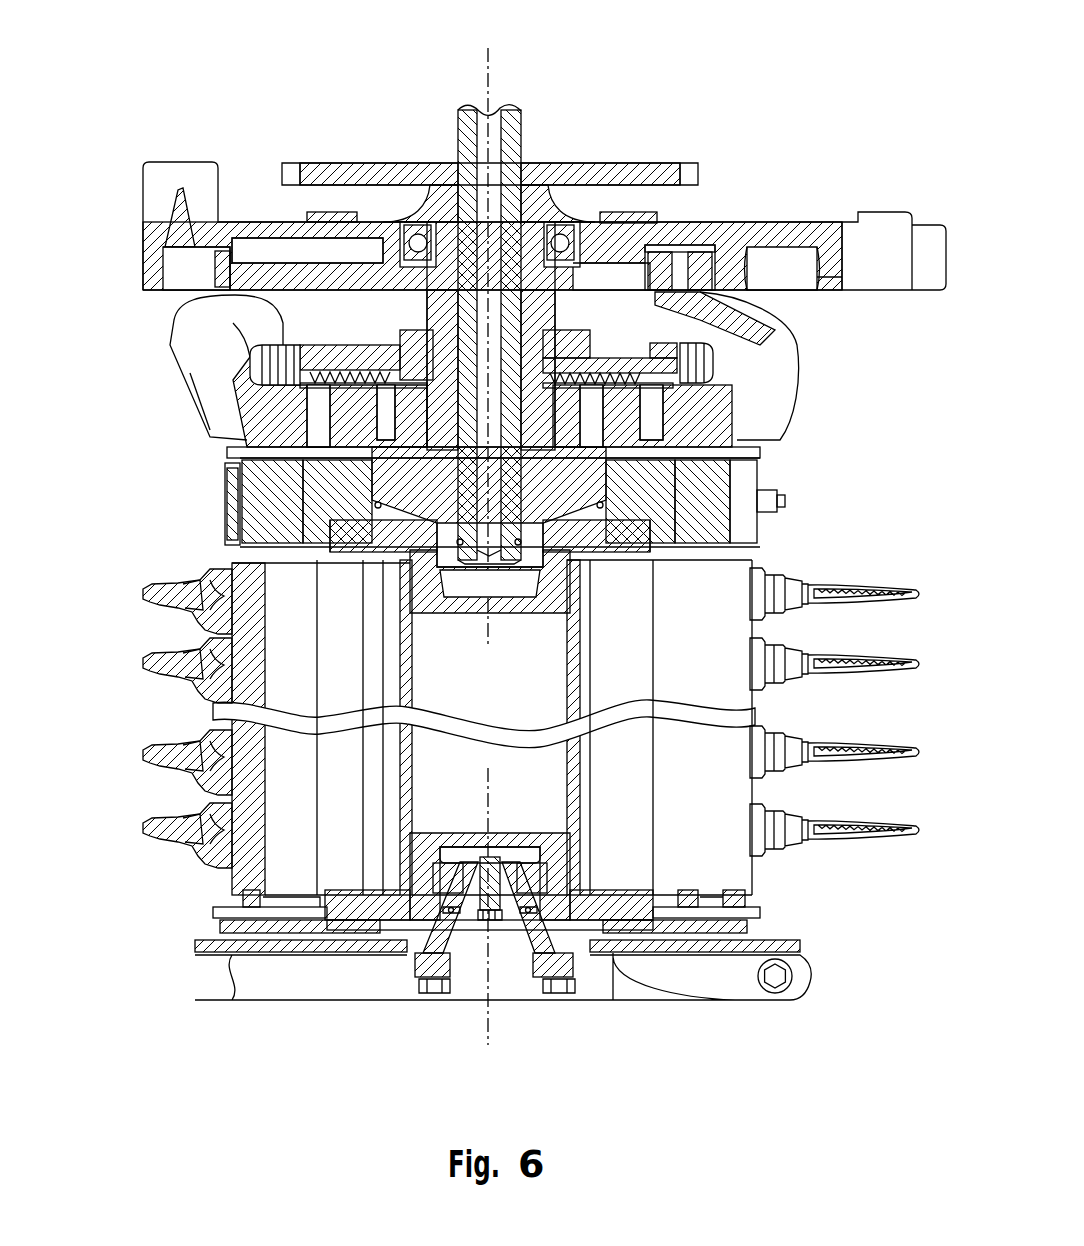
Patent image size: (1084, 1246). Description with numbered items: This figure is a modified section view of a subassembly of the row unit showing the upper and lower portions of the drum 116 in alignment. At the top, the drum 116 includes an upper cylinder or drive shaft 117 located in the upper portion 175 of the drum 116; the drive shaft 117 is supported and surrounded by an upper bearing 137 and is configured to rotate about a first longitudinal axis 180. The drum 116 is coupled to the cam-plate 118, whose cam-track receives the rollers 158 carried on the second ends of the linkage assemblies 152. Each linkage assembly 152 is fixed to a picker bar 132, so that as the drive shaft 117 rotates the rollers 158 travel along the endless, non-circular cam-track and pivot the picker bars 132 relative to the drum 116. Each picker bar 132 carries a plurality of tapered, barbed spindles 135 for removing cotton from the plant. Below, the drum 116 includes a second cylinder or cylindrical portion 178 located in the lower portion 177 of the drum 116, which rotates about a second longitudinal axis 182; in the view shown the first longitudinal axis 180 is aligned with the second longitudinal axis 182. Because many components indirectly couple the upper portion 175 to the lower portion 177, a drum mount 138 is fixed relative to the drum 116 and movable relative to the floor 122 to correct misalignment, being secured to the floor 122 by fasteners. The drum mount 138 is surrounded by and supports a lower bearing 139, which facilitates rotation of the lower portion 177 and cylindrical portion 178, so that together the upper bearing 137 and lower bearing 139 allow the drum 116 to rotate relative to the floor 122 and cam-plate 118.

The second drum 116 is at (215, 499).
The upper cylinder or drive shaft 117 is at (523, 126).
The second cam-plate 118 is at (926, 212).
The floor 122 is at (707, 970).
The picker bar 132 is at (716, 590).
The spindle 135 is at (885, 585).
The upper bearing 137 is at (418, 226).
The second drum mount 138 is at (468, 947).
The lower bearing 139 is at (575, 856).
The linkage assembly 152 is at (780, 373).
The roller 158 is at (700, 262).
The upper portion of the drum 175 is at (135, 626).
The lower portion of the drum 177 is at (137, 846).
The lower cylinder or cylindrical portion 178 is at (422, 886).
The first longitudinal axis 180 is at (485, 48).
The second longitudinal axis 182 is at (490, 1045).